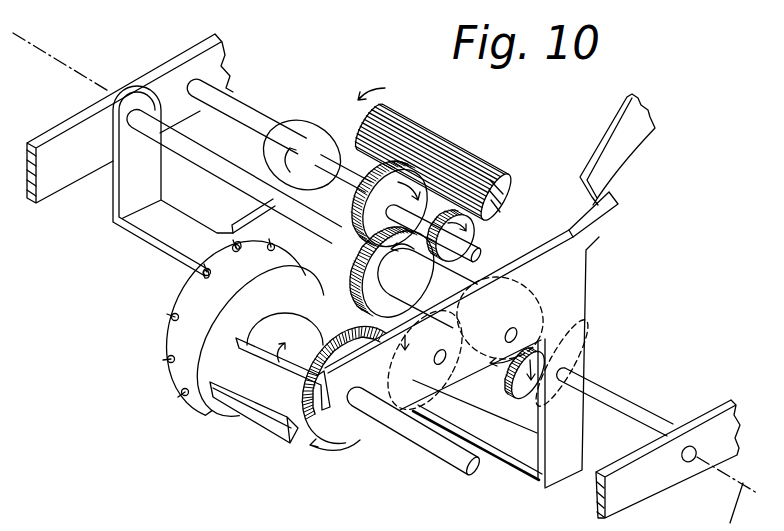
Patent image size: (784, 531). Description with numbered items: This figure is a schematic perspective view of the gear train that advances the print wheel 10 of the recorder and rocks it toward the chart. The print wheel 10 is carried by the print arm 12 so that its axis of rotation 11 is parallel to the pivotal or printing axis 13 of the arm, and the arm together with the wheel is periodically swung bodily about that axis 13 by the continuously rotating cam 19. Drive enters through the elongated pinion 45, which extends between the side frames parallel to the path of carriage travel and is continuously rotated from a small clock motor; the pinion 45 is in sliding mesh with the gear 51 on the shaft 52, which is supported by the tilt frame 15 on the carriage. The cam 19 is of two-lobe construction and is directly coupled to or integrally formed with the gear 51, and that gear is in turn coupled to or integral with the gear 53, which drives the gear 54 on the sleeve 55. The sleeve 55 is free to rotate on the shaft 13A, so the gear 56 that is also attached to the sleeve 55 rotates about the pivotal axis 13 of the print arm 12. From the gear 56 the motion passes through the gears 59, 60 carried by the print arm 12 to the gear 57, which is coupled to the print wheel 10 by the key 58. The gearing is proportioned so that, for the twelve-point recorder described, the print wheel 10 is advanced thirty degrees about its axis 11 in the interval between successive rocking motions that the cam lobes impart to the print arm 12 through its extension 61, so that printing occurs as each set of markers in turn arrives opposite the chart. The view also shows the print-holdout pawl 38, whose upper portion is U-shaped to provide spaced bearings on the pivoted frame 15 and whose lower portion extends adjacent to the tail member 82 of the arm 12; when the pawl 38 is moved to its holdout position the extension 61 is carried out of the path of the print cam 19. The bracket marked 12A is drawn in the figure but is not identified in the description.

The print wheel 10 is at (178, 331).
The axis of rotation 11 is at (442, 455).
The print arm 12 is at (588, 280).
The bracket 12A is at (152, 237).
The pivotal axis 13 is at (33, 43).
The shaft 13A is at (188, 145).
The tilt frame 15 is at (717, 403).
The cam 19 is at (307, 122).
The print-holdout pawl 38 is at (610, 147).
The elongated pinion 45 is at (480, 165).
The gear 51 is at (391, 209).
The shaft 52 is at (240, 108).
The gear 53 is at (477, 233).
The gear 54 is at (357, 275).
The sleeve 55 is at (487, 258).
The gear 56 is at (533, 400).
The gear 57 is at (362, 443).
The key 58 is at (238, 352).
The gear 59 is at (427, 397).
The gear 60 is at (495, 393).
The extension 61 is at (260, 208).
The tail member 82 is at (603, 218).